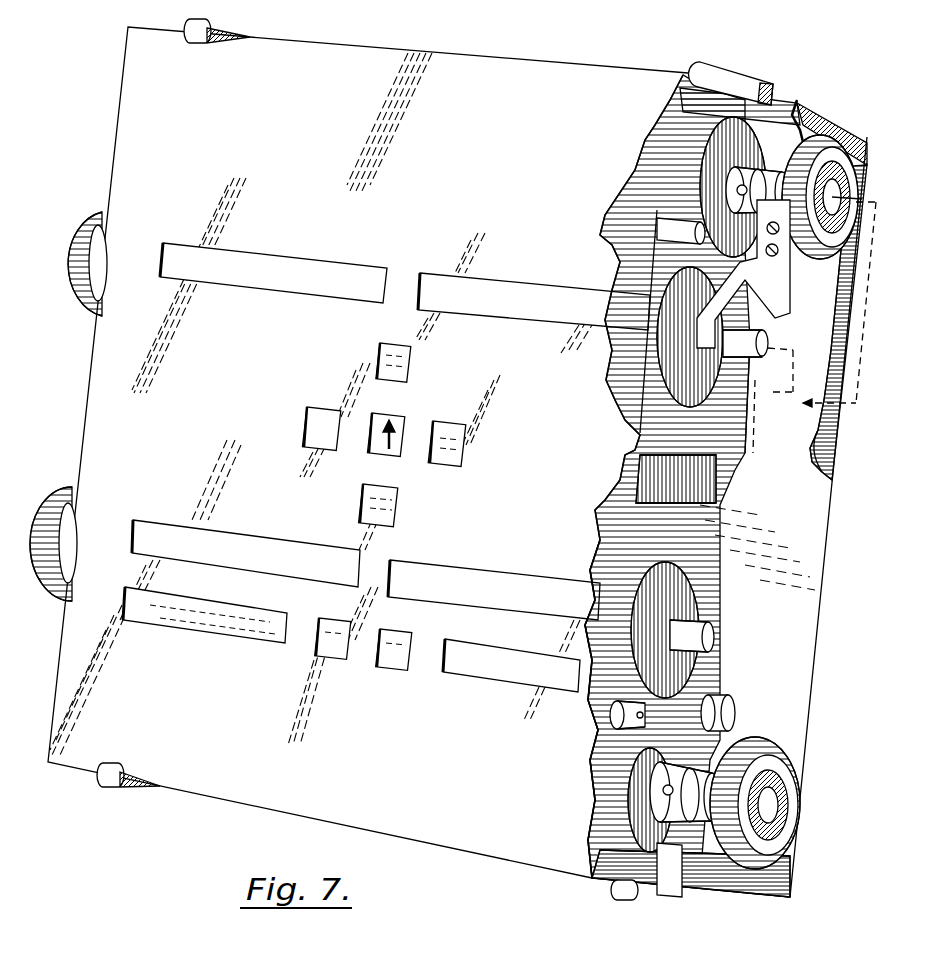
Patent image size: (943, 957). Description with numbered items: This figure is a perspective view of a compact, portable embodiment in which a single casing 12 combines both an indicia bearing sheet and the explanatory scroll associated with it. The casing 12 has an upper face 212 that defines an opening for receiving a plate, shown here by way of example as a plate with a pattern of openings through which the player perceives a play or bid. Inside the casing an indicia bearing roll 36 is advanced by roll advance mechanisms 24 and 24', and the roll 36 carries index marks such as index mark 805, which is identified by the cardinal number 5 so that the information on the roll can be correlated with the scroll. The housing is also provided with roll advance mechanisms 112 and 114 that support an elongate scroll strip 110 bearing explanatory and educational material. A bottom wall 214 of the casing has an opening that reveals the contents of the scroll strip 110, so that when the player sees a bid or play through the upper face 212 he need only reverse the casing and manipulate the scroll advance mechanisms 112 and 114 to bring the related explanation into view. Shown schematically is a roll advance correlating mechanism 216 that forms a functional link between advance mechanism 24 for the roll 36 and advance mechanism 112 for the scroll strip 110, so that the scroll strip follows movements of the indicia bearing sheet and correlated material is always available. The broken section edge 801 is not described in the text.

The upper face 212 is at (368, 448).
The cardinal number 5 is at (552, 702).
The strip-moving mechanism 112 is at (83, 232).
The strip-moving mechanism 114 is at (48, 504).
The housing 12 is at (830, 609).
The broken section edge 801 is at (612, 226).
The index mark 805 is at (566, 709).
The roll advance mechanism 24 is at (794, 190).
The indicia bearing sheet 36 is at (684, 350).
The bottom wall 214 is at (799, 327).
The roll advance correlating mechanism 216 is at (768, 438).
The scroll strip 110 is at (679, 618).
The roll advance mechanism 24' is at (732, 803).